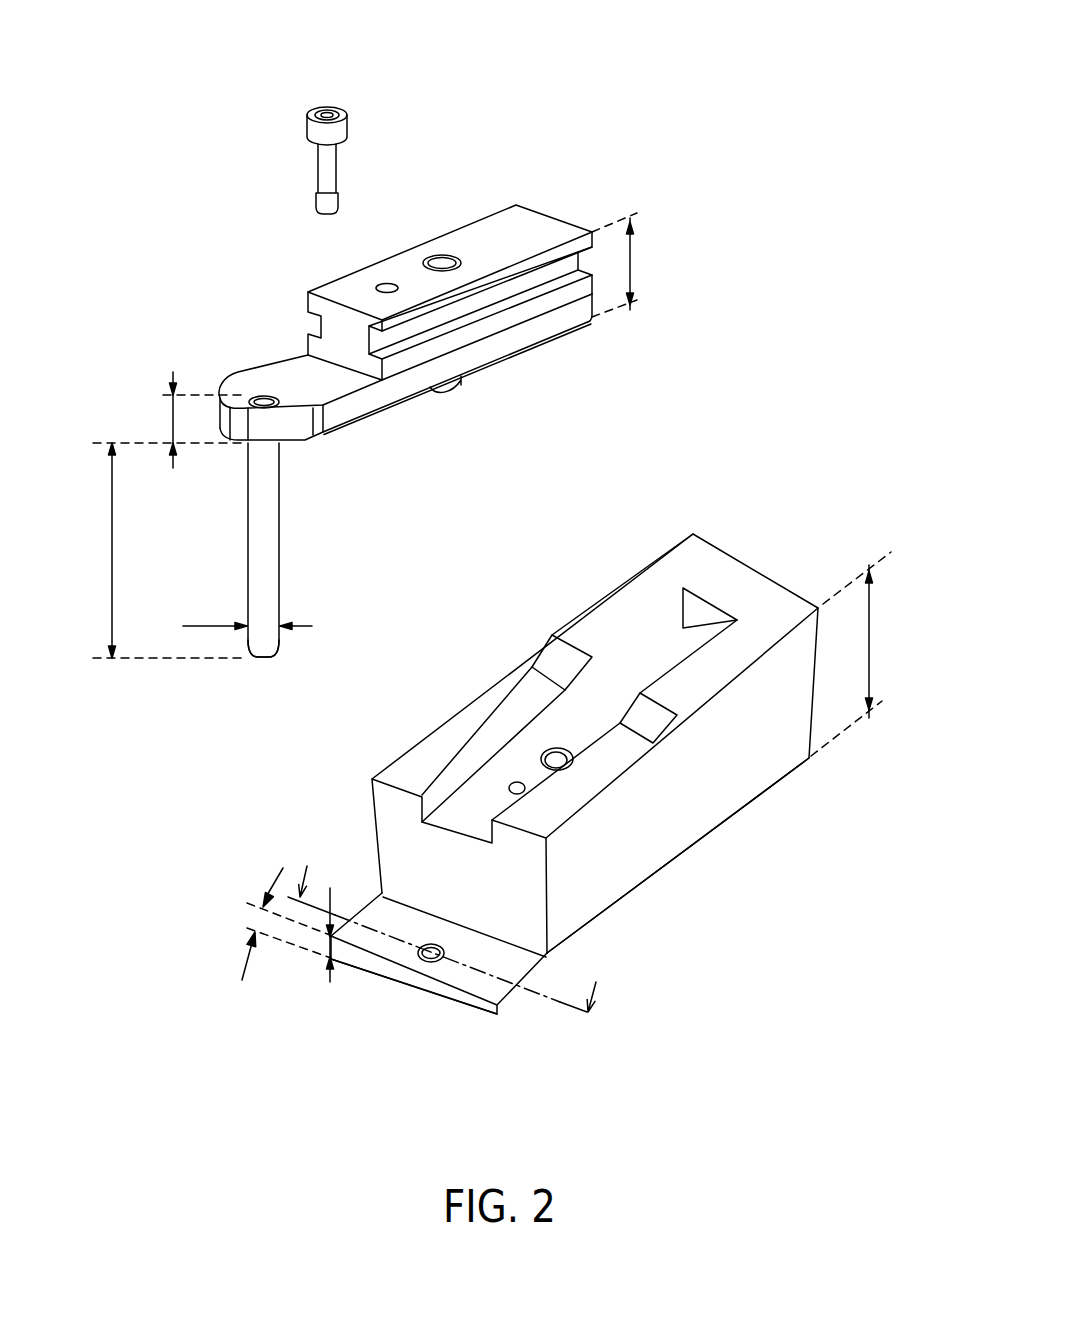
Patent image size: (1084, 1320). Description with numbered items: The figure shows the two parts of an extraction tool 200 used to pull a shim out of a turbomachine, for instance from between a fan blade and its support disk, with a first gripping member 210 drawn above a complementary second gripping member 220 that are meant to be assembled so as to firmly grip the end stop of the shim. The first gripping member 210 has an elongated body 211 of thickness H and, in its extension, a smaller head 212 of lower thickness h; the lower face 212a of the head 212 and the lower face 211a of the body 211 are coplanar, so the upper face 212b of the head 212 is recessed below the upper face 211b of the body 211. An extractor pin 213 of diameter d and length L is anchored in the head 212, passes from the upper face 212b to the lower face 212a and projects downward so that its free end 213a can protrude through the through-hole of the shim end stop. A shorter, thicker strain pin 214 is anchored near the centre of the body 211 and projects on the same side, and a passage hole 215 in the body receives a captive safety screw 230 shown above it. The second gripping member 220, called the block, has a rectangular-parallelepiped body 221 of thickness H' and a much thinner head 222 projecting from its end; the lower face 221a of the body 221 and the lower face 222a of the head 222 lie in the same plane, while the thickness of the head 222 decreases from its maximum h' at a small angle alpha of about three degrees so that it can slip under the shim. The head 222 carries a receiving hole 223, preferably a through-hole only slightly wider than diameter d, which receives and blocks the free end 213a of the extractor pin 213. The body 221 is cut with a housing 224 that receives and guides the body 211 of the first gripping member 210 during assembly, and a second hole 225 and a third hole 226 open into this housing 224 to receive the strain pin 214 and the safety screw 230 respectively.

The extraction tool 200 is at (845, 170).
The first gripping member 210 is at (252, 318).
The body 211 is at (495, 227).
The lower face 211a is at (575, 343).
The upper face 211b is at (557, 203).
The head 212 is at (321, 389).
The lower face 212a is at (236, 457).
The upper face 212b is at (227, 375).
The extractor pin 213 is at (267, 395).
The free end 213a is at (259, 672).
The strain pin 214 is at (440, 262).
The passage hole 215 is at (386, 283).
The second gripping member 220 is at (767, 878).
The body 221 is at (738, 572).
The lower face 221a is at (660, 888).
The head 222 is at (515, 986).
The lower face 222a is at (478, 1028).
The receiving hole 223 is at (430, 962).
The housing 224 is at (450, 828).
The second hole 225 is at (553, 752).
The third hole 226 is at (514, 784).
The safety screw 230 is at (333, 106).